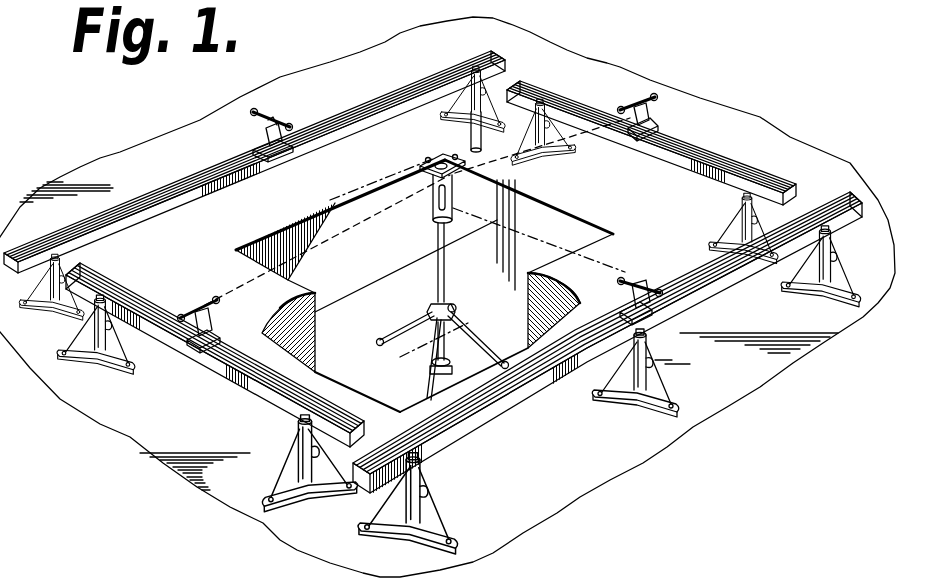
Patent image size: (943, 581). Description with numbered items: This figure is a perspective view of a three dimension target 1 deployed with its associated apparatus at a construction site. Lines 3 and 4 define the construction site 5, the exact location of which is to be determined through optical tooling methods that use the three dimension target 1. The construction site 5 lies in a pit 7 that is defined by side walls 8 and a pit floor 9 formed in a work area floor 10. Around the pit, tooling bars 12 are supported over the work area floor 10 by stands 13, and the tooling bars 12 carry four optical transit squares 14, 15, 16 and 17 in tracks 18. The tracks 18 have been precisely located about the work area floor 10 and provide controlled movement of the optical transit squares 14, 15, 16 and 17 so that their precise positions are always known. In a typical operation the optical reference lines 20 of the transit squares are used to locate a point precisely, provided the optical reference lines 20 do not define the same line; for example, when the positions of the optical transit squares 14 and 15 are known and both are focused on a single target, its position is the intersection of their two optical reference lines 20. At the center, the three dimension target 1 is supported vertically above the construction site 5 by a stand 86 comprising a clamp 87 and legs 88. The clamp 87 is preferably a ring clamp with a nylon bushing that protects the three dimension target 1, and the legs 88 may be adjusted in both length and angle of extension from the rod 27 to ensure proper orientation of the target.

The three dimension target 1 is at (453, 215).
The line 3 is at (425, 360).
The line 4 is at (430, 378).
The construction site 5 is at (450, 365).
The pit 7 is at (553, 220).
The side walls 8 is at (362, 203).
The pit floor 9 is at (358, 305).
The work area floor 10 is at (722, 116).
The tooling bars 12 is at (678, 160).
The stands 13 is at (72, 368).
The optical transit square 14 is at (636, 280).
The optical transit square 15 is at (642, 98).
The optical transit square 16 is at (272, 118).
The optical transit square 17 is at (210, 300).
The tracks 18 is at (190, 186).
The optical reference lines 20 is at (510, 168).
The rod 27 is at (438, 247).
The stand 86 is at (452, 303).
The clamp 87 is at (436, 305).
The legs 88 is at (485, 348).